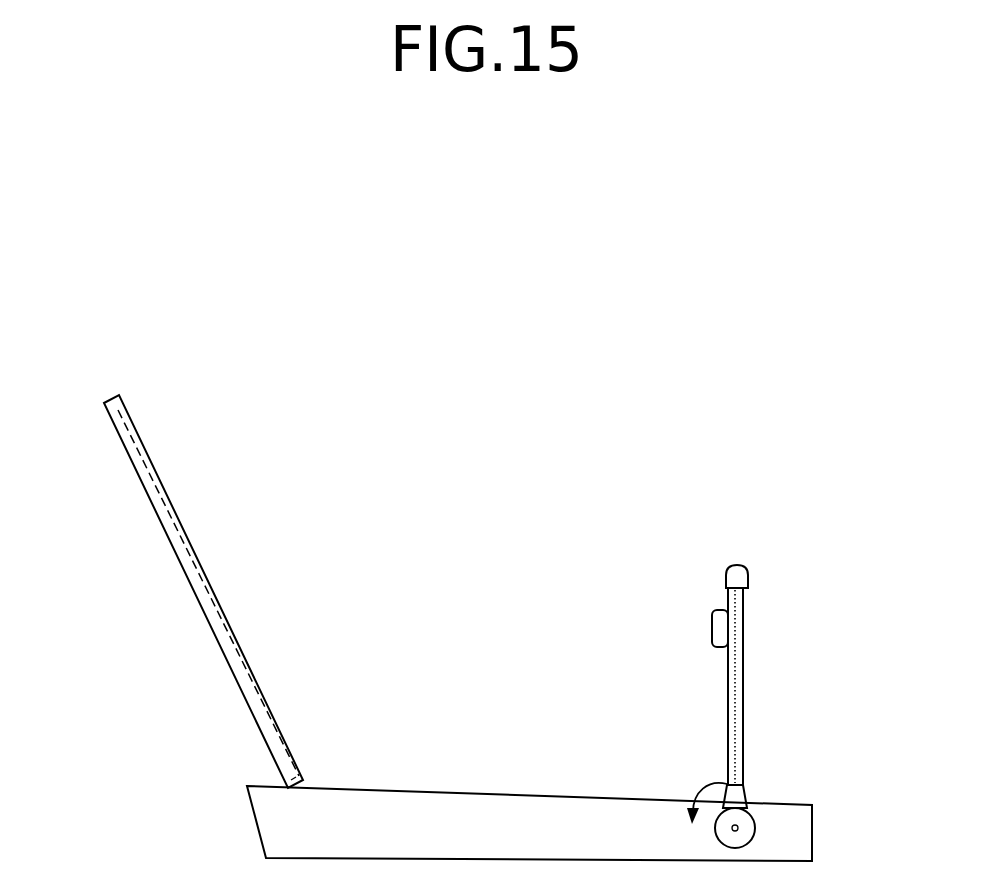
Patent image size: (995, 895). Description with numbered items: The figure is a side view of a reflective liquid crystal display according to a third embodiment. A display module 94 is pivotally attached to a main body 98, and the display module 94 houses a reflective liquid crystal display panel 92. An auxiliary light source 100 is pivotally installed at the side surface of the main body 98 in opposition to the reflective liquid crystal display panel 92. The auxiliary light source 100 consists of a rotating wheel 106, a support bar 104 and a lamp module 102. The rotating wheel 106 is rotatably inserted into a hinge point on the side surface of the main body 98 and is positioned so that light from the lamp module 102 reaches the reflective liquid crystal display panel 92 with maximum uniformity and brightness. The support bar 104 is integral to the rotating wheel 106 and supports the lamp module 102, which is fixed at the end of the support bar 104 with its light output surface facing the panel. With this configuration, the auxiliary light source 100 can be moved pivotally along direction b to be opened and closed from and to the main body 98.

The reflective liquid crystal display panel 92 is at (137, 445).
The display module 94 is at (160, 517).
The main body 98 is at (803, 837).
The auxiliary light source 100 is at (785, 442).
The lamp module 102 is at (716, 627).
The support bar 104 is at (741, 722).
The rotating wheel 106 is at (749, 817).